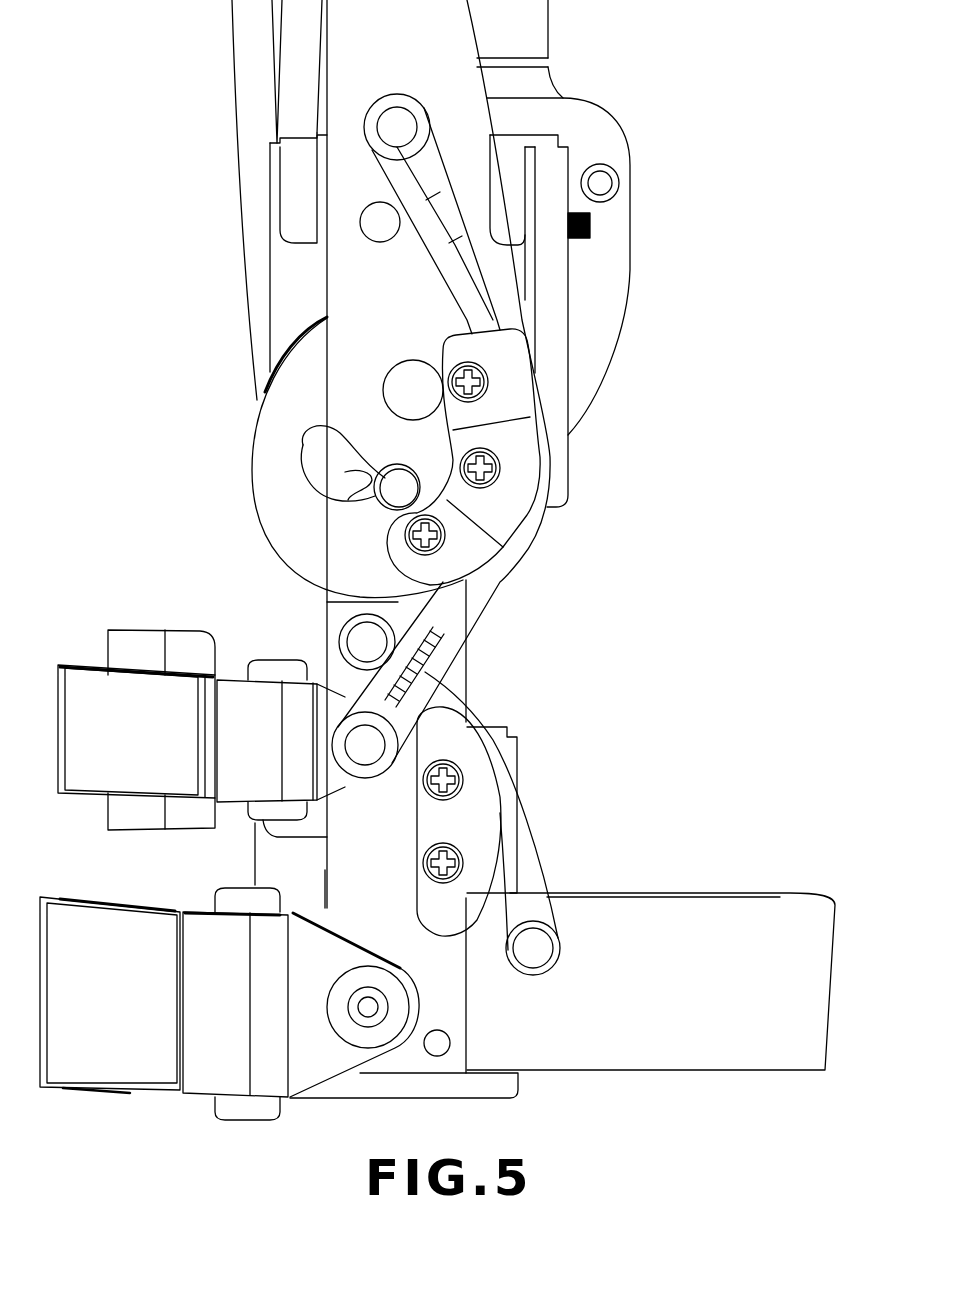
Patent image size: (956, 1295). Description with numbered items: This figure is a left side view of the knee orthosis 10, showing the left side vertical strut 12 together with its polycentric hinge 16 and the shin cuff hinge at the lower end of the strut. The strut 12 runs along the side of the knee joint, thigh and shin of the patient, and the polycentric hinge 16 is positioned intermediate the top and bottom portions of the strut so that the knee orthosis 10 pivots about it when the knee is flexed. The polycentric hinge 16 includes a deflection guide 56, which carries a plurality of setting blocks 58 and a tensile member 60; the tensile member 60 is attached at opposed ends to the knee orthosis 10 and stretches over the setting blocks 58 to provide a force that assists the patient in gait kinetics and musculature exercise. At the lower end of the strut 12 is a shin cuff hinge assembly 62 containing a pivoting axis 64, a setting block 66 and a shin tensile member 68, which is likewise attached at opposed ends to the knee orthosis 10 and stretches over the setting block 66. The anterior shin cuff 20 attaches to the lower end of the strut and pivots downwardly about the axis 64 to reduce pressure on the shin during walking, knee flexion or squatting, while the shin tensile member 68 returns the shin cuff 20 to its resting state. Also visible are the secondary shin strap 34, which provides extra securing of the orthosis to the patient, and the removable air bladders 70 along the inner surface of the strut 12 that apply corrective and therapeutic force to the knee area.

The knee orthosis 10 is at (168, 70).
The left side vertical strut 12 is at (382, 63).
The polycentric hinge 16 is at (298, 502).
The shin cuff 20 is at (687, 1038).
The secondary shin strap 34 is at (88, 692).
The deflection guide 56 is at (503, 390).
The setting blocks 58 is at (500, 447).
The tensile member 60 is at (480, 595).
The shin cuff hinge assembly 62 is at (407, 952).
The pivoting axis 64 is at (440, 1047).
The setting block 66 is at (465, 812).
The shin tensile member 68 is at (525, 858).
The air bladders 70 is at (545, 290).